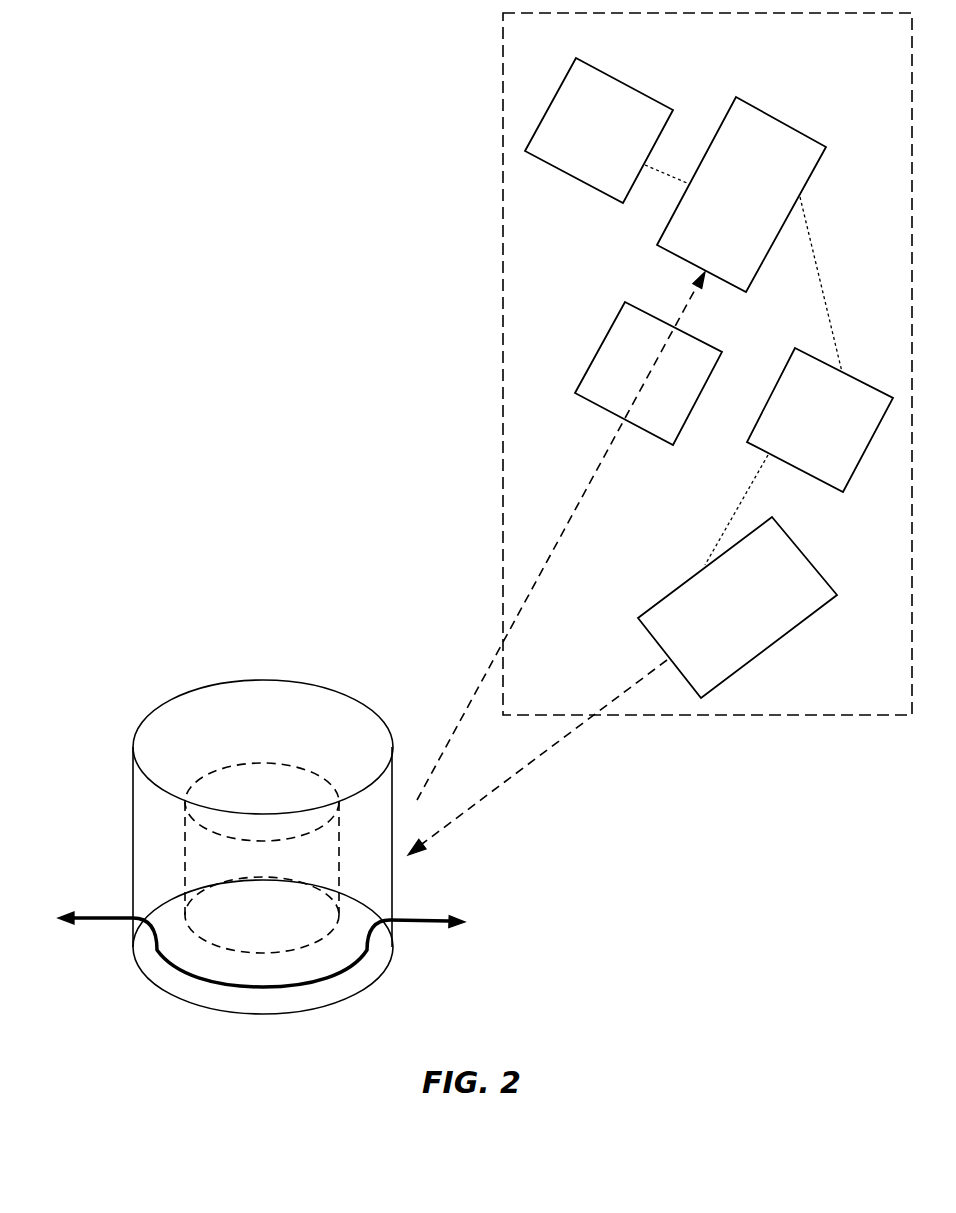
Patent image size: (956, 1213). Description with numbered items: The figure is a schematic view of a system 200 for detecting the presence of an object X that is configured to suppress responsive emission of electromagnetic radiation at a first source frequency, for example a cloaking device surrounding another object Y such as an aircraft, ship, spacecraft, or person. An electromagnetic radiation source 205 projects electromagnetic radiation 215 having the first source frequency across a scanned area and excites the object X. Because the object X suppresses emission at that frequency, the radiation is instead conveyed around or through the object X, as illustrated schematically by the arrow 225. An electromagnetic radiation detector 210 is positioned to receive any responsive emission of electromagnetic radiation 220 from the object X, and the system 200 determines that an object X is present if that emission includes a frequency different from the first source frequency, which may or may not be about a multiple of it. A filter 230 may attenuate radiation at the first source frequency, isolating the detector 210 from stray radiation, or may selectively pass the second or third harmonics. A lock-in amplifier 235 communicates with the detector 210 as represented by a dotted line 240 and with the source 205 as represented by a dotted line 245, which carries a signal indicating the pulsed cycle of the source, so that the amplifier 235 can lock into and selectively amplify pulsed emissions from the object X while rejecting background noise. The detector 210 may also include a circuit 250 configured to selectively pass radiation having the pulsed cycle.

The system 200 is at (502, 338).
The electromagnetic radiation source 205 is at (761, 621).
The electromagnetic radiation detector 210 is at (758, 210).
The electromagnetic radiation 215 is at (525, 767).
The electromagnetic radiation 220 is at (470, 680).
The arrow 225 is at (415, 923).
The filter 230 is at (643, 376).
The lock-in amplifier 235 is at (842, 431).
The dotted line 240 is at (827, 298).
The dotted line 245 is at (737, 510).
The circuit 250 is at (622, 143).
The object X is at (243, 680).
The object Y is at (183, 872).